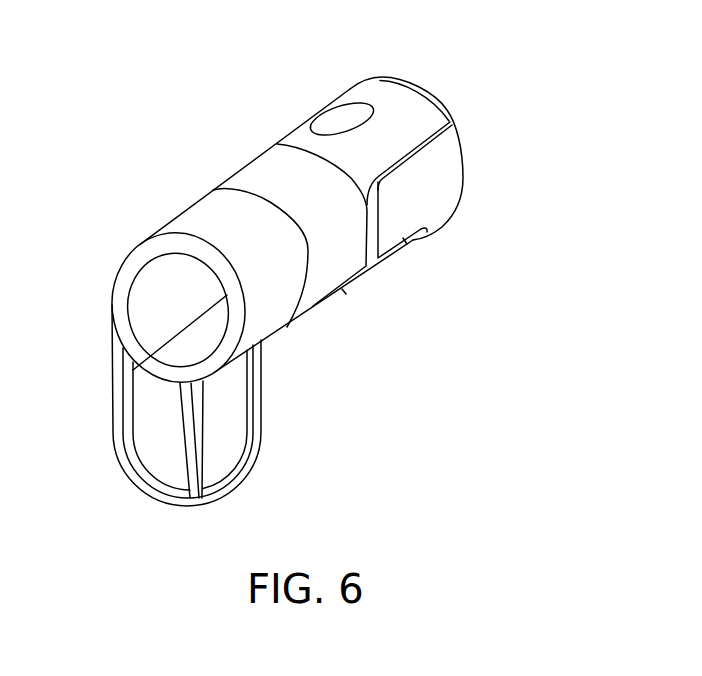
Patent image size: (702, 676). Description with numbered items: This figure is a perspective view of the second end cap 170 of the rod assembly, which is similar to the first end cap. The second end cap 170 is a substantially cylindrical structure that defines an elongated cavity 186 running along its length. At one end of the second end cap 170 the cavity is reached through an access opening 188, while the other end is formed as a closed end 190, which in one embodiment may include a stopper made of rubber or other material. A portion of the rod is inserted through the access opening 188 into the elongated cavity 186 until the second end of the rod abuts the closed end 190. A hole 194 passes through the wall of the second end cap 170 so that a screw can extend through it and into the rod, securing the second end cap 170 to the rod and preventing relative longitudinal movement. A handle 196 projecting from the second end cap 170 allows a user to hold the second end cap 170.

The second end cap 170 is at (158, 50).
The elongated cavity 186 is at (151, 300).
The access opening 188 is at (181, 344).
The closed end 190 is at (438, 102).
The hole 194 is at (320, 105).
The handle 196 is at (262, 432).